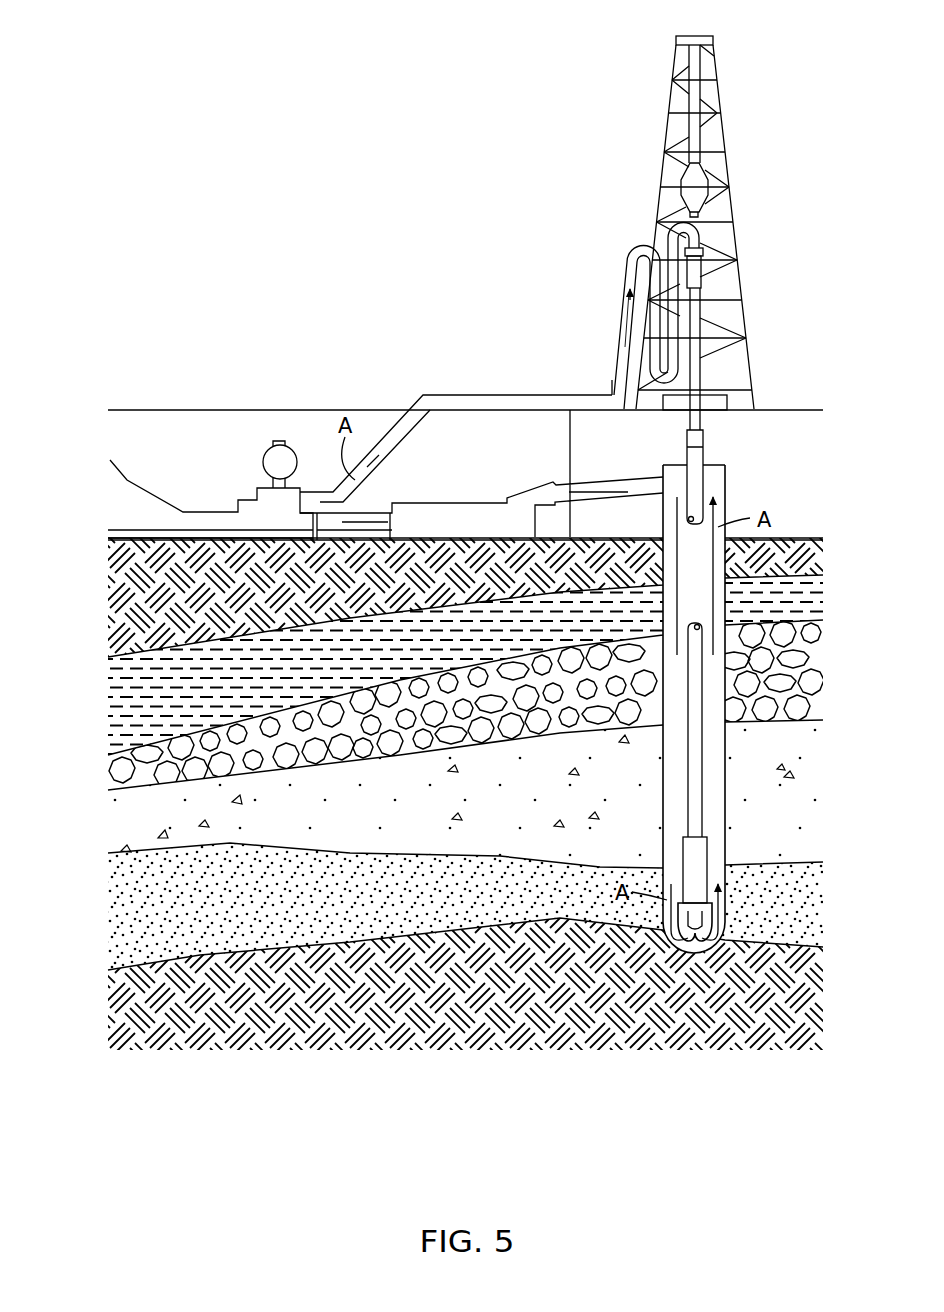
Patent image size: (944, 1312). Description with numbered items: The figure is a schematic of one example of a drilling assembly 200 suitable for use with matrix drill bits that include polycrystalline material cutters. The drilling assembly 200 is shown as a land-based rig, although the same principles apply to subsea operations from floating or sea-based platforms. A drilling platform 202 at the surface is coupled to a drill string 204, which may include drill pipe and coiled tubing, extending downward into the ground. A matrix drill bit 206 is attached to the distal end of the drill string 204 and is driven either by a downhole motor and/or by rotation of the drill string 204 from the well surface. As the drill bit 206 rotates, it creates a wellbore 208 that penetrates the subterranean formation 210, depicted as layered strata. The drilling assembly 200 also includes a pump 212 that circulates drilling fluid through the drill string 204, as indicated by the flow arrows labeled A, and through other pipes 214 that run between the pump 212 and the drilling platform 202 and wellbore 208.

The drilling assembly 200 is at (536, 109).
The drilling platform 202 is at (775, 392).
The drill string 204 is at (708, 448).
The matrix drill bit 206 is at (710, 927).
The wellbore 208 is at (727, 812).
The subterranean formation 210 is at (94, 821).
The pump 212 is at (254, 490).
The pipes 214 is at (486, 395).